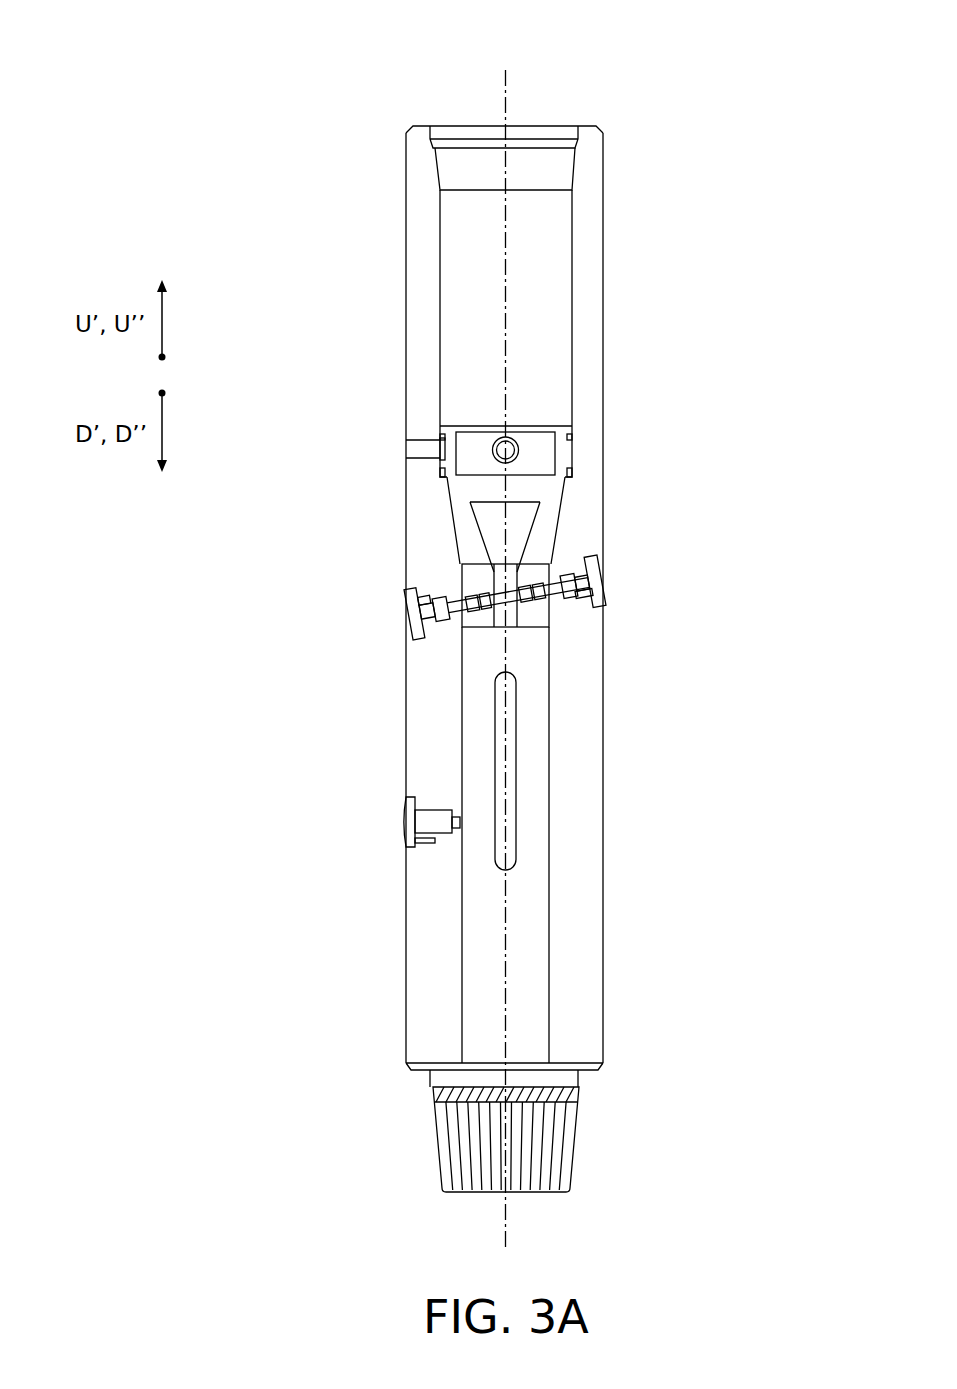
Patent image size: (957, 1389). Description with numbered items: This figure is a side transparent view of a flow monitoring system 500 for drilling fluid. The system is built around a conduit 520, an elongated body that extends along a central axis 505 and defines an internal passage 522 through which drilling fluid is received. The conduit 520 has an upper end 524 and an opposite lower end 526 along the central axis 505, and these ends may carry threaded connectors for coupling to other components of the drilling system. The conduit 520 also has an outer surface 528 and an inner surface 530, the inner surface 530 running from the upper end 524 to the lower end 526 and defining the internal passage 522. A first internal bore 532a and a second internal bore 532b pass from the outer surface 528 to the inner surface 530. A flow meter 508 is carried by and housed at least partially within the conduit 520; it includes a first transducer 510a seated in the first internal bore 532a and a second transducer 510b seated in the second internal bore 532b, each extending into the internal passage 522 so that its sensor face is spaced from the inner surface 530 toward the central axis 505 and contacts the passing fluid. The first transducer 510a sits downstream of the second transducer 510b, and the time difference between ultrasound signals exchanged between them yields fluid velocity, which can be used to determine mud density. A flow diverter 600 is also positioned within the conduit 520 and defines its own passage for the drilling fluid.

The flow monitoring system 500 is at (728, 106).
The central axis 505 is at (503, 95).
The flow meter 508 is at (437, 630).
The first transducer 510a is at (410, 624).
The second transducer 510b is at (596, 582).
The conduit 520 is at (422, 222).
The internal passage 522 is at (470, 310).
The upper end 524 is at (401, 128).
The lower end 526 is at (428, 1107).
The outer surface 528 is at (405, 342).
The inner surface 530 is at (447, 415).
The first internal bore 532a is at (448, 585).
The second internal bore 532b is at (565, 570).
The flow diverter 600 is at (468, 508).